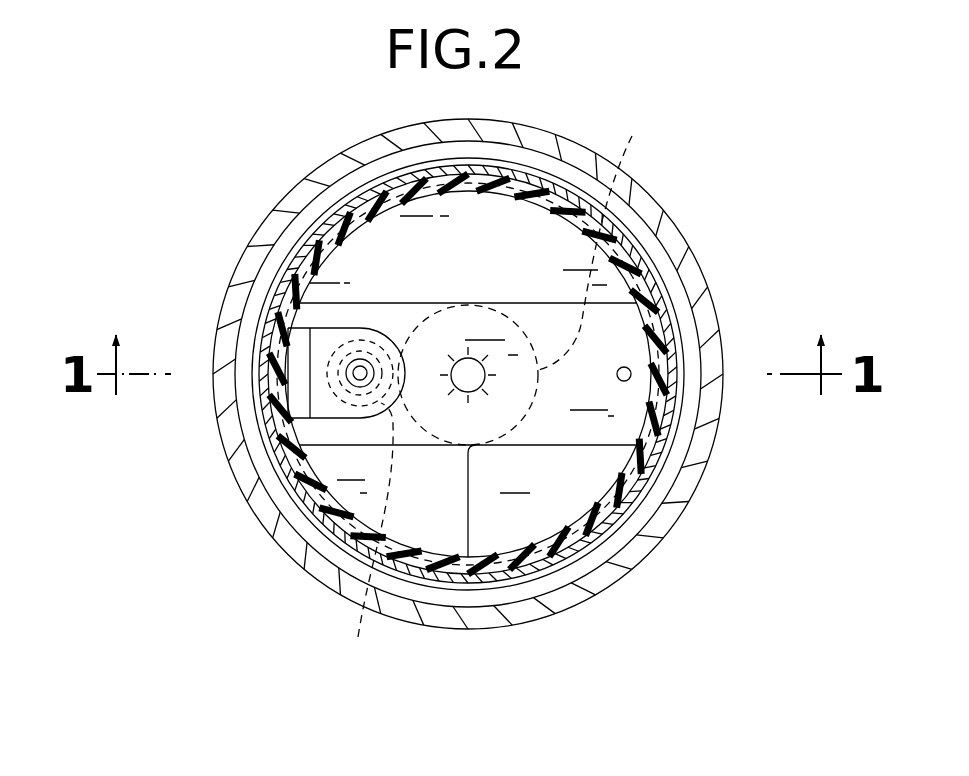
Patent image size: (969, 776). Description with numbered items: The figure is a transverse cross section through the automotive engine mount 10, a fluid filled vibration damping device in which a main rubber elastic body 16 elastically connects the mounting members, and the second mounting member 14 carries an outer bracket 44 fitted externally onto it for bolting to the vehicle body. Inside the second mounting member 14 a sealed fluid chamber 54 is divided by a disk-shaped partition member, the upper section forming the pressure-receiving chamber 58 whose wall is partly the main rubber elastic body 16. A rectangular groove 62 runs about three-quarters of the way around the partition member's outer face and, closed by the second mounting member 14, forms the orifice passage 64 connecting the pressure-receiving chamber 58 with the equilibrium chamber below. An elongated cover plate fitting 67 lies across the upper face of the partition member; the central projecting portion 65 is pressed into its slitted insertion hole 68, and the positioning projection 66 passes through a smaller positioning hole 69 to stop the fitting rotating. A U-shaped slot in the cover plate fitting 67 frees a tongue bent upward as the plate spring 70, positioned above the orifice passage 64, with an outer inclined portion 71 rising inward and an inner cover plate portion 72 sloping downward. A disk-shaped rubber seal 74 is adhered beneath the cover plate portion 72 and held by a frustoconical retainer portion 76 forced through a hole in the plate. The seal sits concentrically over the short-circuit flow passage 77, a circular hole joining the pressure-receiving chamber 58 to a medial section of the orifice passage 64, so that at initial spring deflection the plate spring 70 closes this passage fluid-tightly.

The engine mount 10 is at (721, 133).
The second mounting member 14 is at (690, 353).
The main rubber elastic body 16 is at (638, 552).
The outer bracket 44 is at (712, 462).
The fluid chamber 54 is at (393, 243).
The pressure-receiving chamber 58 is at (481, 262).
The rectangular groove 62 is at (546, 278).
The orifice passage 64 is at (468, 375).
The projecting portion 65 is at (472, 377).
The positioning projection 66 is at (630, 373).
The cover plate fitting 67 is at (615, 298).
The insertion hole 68 is at (456, 371).
The positioning hole 69 is at (690, 488).
The plate spring 70 is at (330, 424).
The inclined portion 71 is at (298, 433).
The cover plate portion 72 is at (323, 343).
The rubber seal 74 is at (369, 534).
The retainer portion 76 is at (352, 374).
The short-circuit flow passage 77 is at (318, 358).